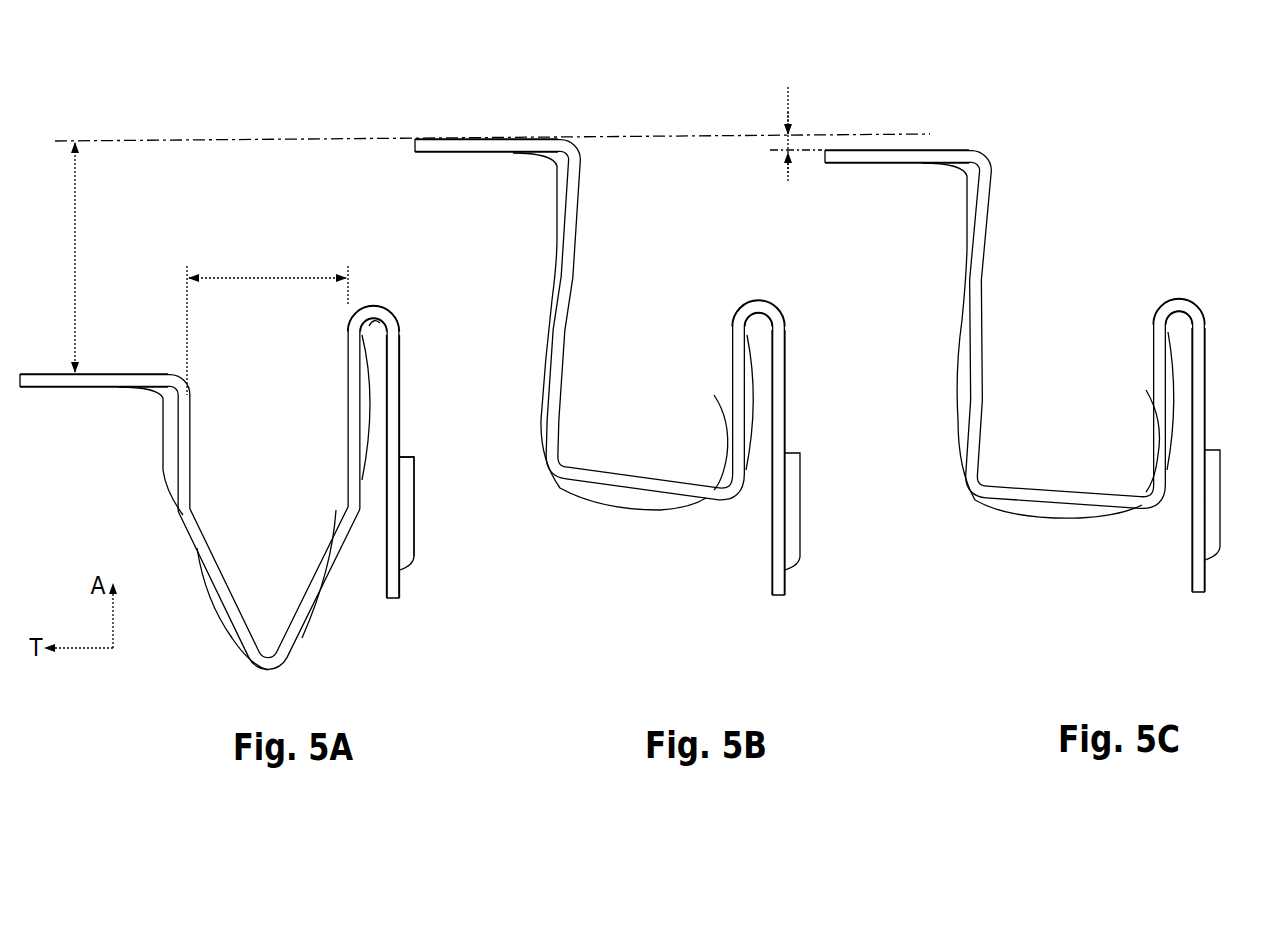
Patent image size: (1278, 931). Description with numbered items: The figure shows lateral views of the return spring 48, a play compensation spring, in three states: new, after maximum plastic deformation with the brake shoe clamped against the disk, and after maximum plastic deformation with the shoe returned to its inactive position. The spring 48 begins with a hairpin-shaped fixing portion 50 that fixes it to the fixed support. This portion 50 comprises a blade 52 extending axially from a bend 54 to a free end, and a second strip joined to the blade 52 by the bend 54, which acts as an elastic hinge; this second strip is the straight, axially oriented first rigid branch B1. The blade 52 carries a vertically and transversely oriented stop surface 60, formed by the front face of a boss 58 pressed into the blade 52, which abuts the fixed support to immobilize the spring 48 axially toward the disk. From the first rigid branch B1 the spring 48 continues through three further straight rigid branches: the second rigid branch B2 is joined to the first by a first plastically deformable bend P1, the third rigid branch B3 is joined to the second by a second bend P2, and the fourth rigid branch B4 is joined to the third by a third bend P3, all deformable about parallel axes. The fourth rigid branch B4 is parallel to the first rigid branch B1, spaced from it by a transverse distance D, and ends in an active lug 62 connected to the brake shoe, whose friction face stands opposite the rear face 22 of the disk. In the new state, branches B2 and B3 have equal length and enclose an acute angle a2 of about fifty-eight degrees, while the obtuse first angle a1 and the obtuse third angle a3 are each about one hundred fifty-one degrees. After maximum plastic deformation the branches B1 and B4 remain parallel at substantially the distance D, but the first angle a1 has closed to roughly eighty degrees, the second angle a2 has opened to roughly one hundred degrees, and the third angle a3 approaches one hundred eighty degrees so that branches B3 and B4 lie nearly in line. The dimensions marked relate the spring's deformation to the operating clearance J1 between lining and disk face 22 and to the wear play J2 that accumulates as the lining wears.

In FIG. 5A, the rear face of the disk 22 is at (210, 148).
In FIG. 5A, the return spring 48 is at (332, 674).
In FIG. 5B, the return spring 48 is at (590, 518).
In FIG. 5C, the return spring 48 is at (1040, 545).
In FIG. 5A, the fixing portion 50 is at (406, 302).
In FIG. 5B, the fixing portion 50 is at (800, 330).
In FIG. 5C, the fixing portion 50 is at (1222, 318).
In FIG. 5A, the blade 52 is at (410, 397).
In FIG. 5B, the blade 52 is at (778, 462).
In FIG. 5C, the blade 52 is at (1198, 460).
In FIG. 5A, the bend 54 is at (374, 320).
In FIG. 5A, the boss 58 is at (415, 512).
In FIG. 5B, the boss 58 is at (792, 511).
In FIG. 5C, the boss 58 is at (1212, 505).
In FIG. 5A, the stop surface 60 is at (401, 457).
In FIG. 5A, the active lug 62 is at (60, 393).
In FIG. 5B, the active lug 62 is at (452, 156).
In FIG. 5C, the active lug 62 is at (853, 166).
In FIG. 5A, the first rigid branch B1 is at (346, 458).
In FIG. 5B, the first rigid branch B1 is at (733, 390).
In FIG. 5C, the first rigid branch B1 is at (1152, 386).
In FIG. 5A, the second rigid branch B2 is at (312, 643).
In FIG. 5B, the second rigid branch B2 is at (626, 480).
In FIG. 5C, the second rigid branch B2 is at (1043, 490).
In FIG. 5A, the third rigid branch B3 is at (215, 515).
In FIG. 5B, the third rigid branch B3 is at (566, 355).
In FIG. 5C, the third rigid branch B3 is at (984, 365).
In FIG. 5A, the fourth rigid branch B4 is at (196, 430).
In FIG. 5B, the fourth rigid branch B4 is at (582, 222).
In FIG. 5C, the fourth rigid branch B4 is at (992, 224).
In FIG. 5A, the first bend P1 is at (338, 512).
In FIG. 5B, the first bend P1 is at (712, 488).
In FIG. 5C, the first bend P1 is at (1138, 492).
In FIG. 5A, the second bend P2 is at (272, 647).
In FIG. 5B, the second bend P2 is at (572, 455).
In FIG. 5C, the second bend P2 is at (985, 475).
In FIG. 5A, the third bend P3 is at (197, 503).
In FIG. 5B, the third bend P3 is at (571, 282).
In FIG. 5C, the third bend P3 is at (983, 297).
In FIG. 5A, the angle α1 a1 is at (323, 531).
In FIG. 5B, the angle α1 a1 is at (679, 482).
In FIG. 5A, the angle α2 a2 is at (296, 602).
In FIG. 5B, the angle α2 a2 is at (610, 467).
In FIG. 5A, the angle α3 a3 is at (212, 533).
In FIG. 5B, the angle α3 a3 is at (584, 309).
In FIG. 5B, the operating clearance J1 is at (790, 132).
In FIG. 5A, the wear play J2 is at (58, 257).
In FIG. 5A, the distance D is at (267, 324).